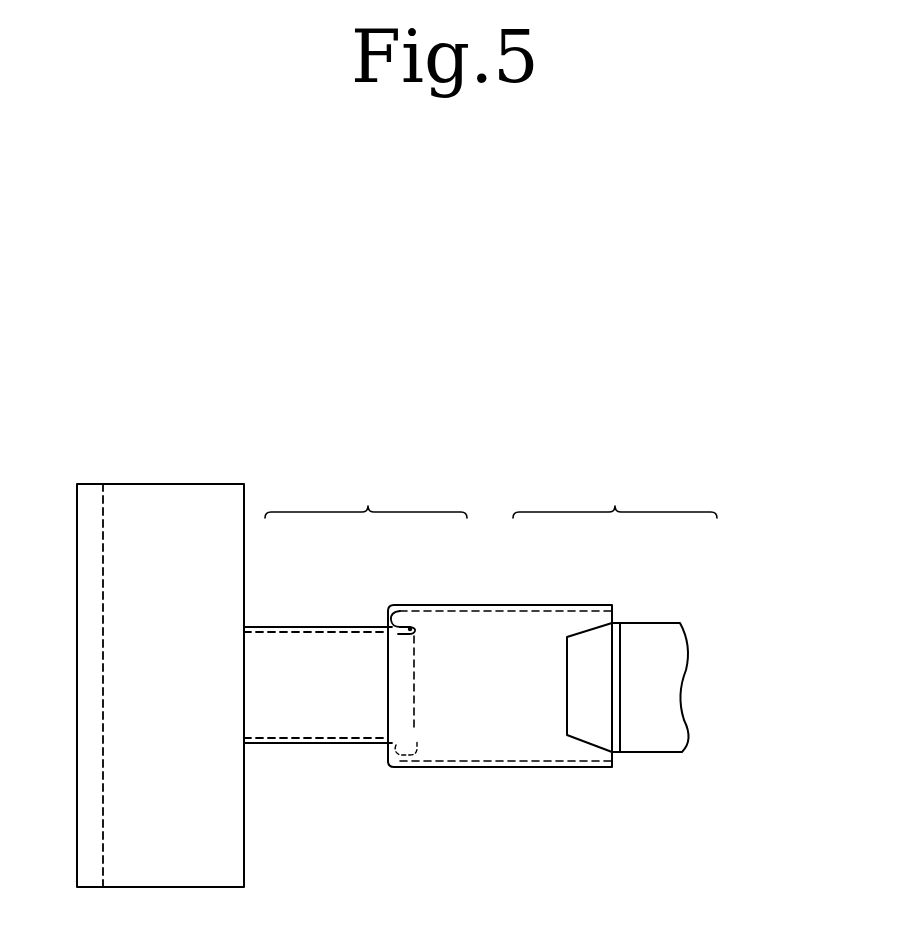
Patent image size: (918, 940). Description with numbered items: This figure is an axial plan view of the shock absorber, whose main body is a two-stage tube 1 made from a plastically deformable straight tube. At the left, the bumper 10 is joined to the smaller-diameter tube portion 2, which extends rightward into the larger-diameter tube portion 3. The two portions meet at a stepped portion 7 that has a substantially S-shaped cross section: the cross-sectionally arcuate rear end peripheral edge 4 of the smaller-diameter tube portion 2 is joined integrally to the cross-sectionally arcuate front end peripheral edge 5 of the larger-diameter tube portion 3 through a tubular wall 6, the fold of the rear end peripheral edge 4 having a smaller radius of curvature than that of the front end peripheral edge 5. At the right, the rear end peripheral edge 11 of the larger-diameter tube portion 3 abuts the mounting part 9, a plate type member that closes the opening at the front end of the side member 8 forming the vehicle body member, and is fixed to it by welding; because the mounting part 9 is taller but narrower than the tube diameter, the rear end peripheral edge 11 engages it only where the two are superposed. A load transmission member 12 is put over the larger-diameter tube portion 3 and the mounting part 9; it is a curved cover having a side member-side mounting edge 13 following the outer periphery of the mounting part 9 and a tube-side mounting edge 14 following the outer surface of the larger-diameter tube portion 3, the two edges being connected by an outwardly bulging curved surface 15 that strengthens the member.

The two-stage tube 1 is at (387, 775).
The smaller-diameter tube portion 2 is at (318, 748).
The larger-diameter tube portion 3 is at (476, 750).
The rear end peripheral edge 4 is at (398, 624).
The front end peripheral edge 5 is at (393, 609).
The tubular wall 6 is at (411, 628).
The stepped portion 7 is at (366, 497).
The side member 8 is at (643, 681).
The mounting part 9 is at (617, 714).
The bumper 10 is at (160, 530).
The rear end peripheral edge 11 is at (612, 766).
The load transmission member 12 is at (615, 497).
The side member-side mounting edge 13 is at (617, 648).
The tube-side mounting edge 14 is at (566, 684).
The curved surface 15 is at (576, 680).